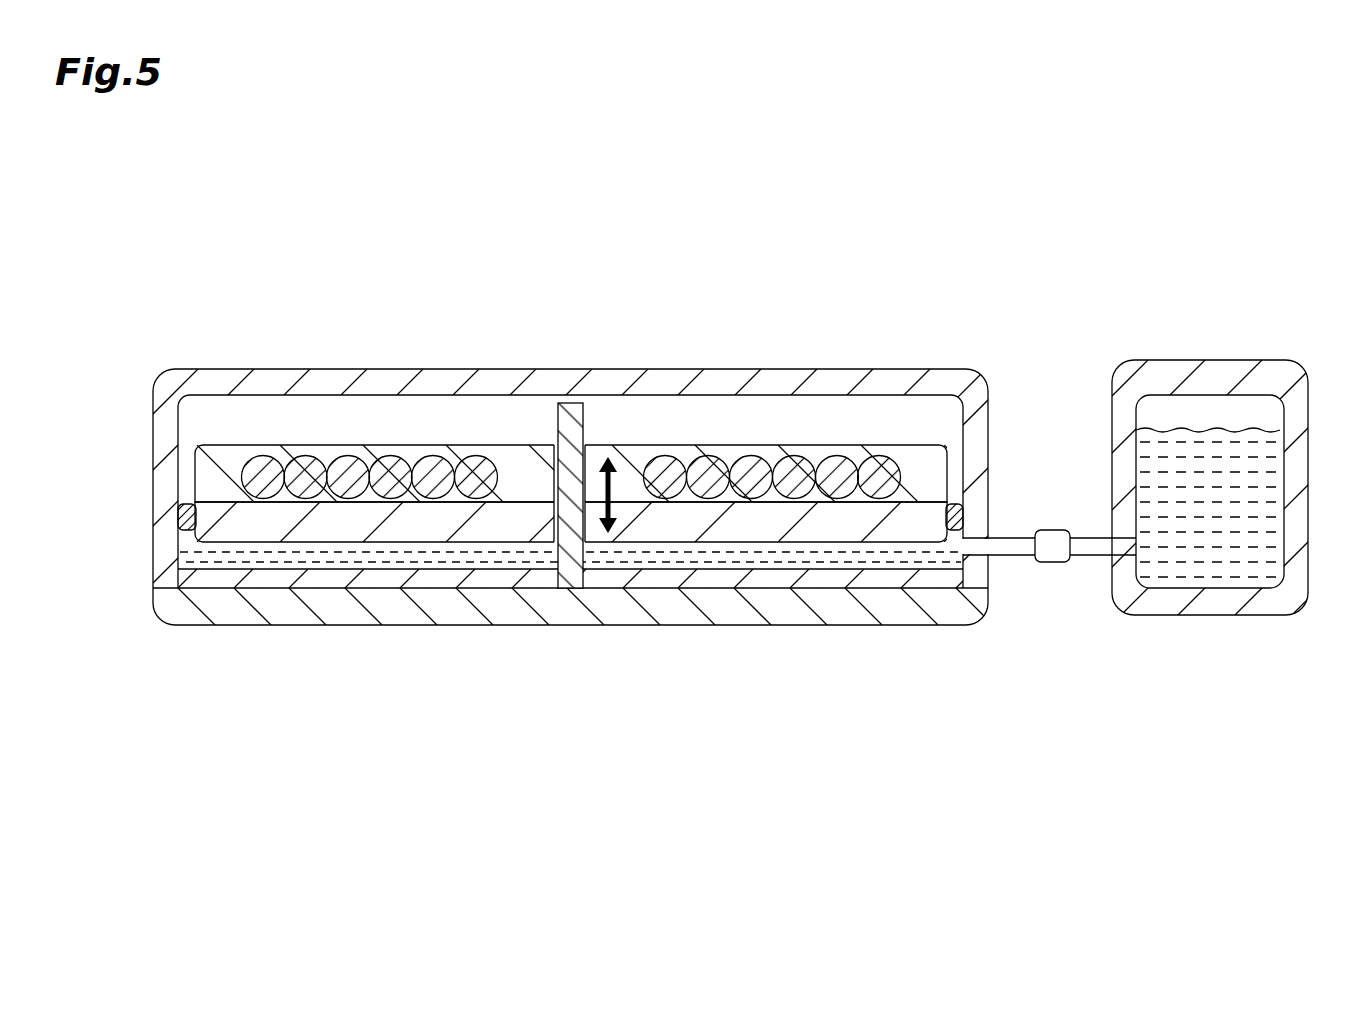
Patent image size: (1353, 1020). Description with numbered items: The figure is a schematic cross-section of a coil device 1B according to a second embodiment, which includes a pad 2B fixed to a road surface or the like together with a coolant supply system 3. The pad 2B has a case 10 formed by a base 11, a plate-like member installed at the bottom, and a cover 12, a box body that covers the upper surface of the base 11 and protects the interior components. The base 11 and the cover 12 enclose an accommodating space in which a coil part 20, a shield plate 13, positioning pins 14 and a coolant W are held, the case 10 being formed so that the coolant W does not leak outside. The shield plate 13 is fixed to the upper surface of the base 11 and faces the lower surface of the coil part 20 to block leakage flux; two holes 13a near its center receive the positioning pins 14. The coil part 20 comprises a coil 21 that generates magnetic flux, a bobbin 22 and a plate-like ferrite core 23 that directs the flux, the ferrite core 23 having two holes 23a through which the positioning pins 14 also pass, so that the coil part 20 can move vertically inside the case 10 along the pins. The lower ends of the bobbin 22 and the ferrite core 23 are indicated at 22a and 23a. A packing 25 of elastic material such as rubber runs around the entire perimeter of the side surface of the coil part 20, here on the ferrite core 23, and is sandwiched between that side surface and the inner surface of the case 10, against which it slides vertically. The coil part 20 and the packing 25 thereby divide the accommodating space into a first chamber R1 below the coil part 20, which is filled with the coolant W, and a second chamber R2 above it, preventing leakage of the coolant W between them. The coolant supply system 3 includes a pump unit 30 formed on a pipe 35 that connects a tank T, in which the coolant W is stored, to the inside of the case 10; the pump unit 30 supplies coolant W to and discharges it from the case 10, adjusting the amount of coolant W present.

The coil device 1B is at (1012, 207).
The pad 2B is at (338, 369).
The second chamber R2 is at (210, 424).
The first chamber R1 is at (210, 558).
The coil part 20 is at (660, 305).
The coil 21 is at (478, 458).
The bobbin 22 is at (527, 457).
The ferrite core 23 is at (633, 522).
The end of carriage 22a is at (555, 458).
The hole 23a is at (572, 492).
The hole 13a is at (580, 565).
The positioning pin 14 is at (575, 560).
The shield plate 13 is at (874, 558).
The packing 25 is at (958, 505).
The coolant supply system 3 is at (1055, 529).
The pump unit 30 is at (1052, 555).
The pipe 35 is at (1013, 548).
The tank T is at (1228, 372).
The coolant W is at (190, 548).
The case 10 is at (98, 535).
The base 11 is at (176, 605).
The cover 12 is at (167, 550).